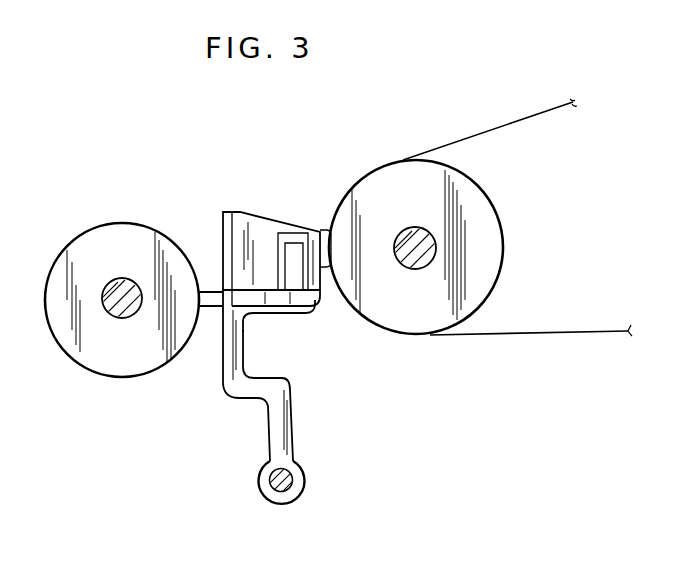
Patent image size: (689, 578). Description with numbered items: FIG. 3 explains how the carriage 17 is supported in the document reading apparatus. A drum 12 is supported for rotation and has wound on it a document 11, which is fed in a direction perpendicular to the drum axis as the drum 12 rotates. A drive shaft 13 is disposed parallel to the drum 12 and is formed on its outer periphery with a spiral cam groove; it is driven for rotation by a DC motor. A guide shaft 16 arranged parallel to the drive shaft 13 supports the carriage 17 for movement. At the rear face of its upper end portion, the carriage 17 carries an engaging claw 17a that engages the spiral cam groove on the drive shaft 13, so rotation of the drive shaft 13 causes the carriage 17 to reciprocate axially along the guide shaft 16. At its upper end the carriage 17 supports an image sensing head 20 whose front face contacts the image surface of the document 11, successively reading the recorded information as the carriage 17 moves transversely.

The document 11 is at (487, 131).
The drum 12 is at (487, 237).
The drive shaft 13 is at (127, 358).
The guide shaft 16 is at (287, 487).
The carriage 17 is at (290, 408).
The engaging claw 17a is at (212, 300).
The image sensing head 20 is at (260, 226).